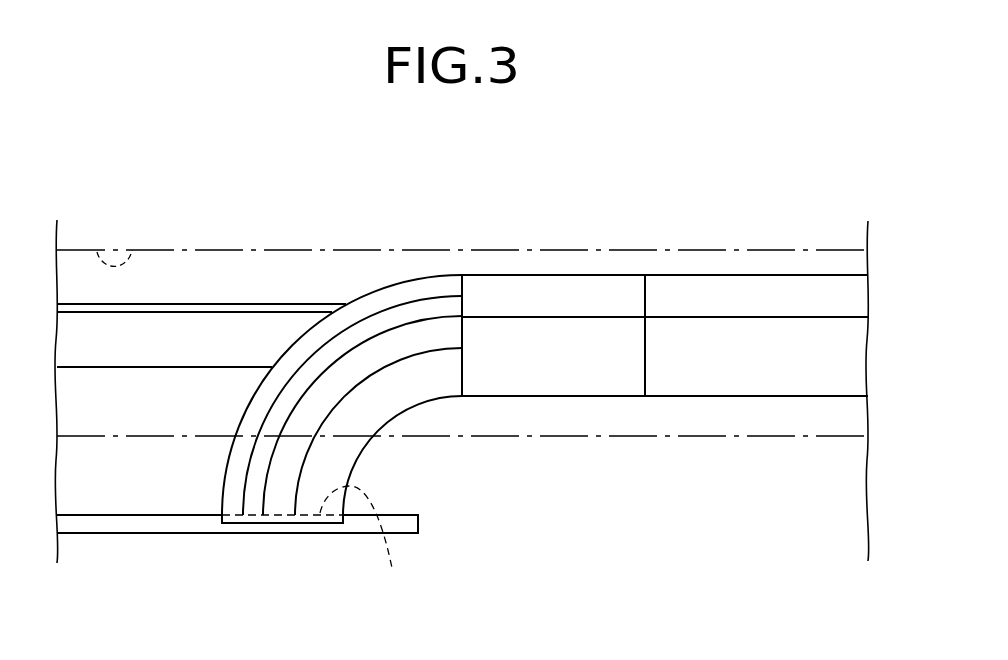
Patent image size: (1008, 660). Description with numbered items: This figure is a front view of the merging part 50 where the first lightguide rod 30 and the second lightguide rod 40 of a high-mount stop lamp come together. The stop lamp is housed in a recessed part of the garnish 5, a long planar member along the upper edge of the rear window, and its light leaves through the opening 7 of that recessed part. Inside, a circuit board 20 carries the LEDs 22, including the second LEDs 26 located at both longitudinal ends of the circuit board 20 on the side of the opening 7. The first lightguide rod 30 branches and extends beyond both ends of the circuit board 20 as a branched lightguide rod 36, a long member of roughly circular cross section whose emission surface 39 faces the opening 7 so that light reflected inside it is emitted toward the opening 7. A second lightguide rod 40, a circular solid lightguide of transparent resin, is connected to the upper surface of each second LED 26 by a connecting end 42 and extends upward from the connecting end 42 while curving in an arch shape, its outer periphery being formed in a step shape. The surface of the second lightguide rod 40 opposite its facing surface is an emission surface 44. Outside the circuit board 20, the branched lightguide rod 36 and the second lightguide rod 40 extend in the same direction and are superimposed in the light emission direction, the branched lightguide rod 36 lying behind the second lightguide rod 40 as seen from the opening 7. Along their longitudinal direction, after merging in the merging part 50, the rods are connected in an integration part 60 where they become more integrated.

The garnish 5 is at (781, 176).
The opening 7 is at (97, 250).
The circuit board 20 is at (115, 525).
The LEDs 22 is at (325, 544).
The second LEDs 26 is at (325, 544).
The first lightguide rod 30 is at (201, 242).
The branched lightguide rod 36 is at (250, 310).
The emission surface 39 is at (184, 342).
The second lightguide rod 40 is at (374, 290).
The connecting end 42 is at (255, 480).
The emission surface 44 is at (535, 342).
The merging part 50 is at (597, 405).
The integration part 60 is at (770, 407).